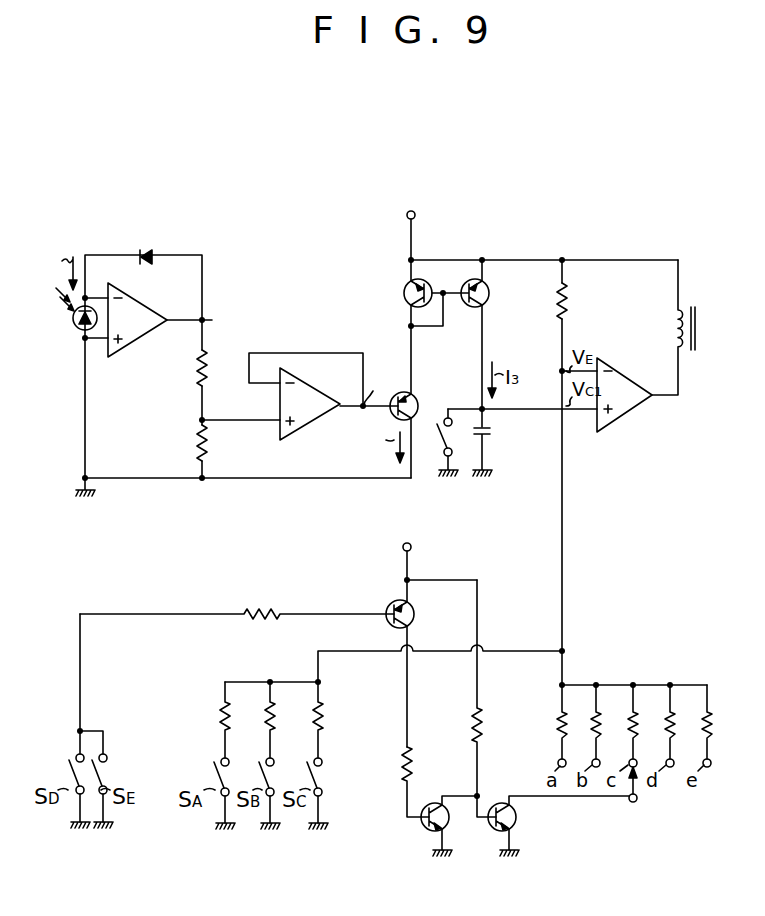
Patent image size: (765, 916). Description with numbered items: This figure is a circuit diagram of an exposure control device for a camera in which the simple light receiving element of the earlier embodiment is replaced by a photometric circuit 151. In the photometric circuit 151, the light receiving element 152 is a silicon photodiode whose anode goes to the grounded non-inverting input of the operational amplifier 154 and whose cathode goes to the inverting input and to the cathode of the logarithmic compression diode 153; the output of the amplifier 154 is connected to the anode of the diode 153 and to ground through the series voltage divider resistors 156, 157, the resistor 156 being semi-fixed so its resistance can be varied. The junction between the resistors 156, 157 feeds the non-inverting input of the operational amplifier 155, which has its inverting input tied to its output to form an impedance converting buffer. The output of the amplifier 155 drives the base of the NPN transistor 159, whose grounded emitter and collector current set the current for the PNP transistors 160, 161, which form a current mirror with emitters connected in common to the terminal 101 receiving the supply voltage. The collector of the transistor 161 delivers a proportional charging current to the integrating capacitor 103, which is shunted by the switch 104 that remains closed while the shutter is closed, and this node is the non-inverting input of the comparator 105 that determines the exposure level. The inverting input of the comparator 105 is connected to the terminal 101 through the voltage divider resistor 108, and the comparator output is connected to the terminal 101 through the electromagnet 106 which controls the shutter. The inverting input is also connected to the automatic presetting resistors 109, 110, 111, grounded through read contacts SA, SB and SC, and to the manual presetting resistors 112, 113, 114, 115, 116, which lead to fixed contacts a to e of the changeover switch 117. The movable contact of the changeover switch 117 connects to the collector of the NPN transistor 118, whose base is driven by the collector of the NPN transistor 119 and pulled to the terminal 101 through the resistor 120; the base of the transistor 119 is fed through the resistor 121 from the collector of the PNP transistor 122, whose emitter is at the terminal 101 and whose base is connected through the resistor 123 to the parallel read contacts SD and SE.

The terminal 101 is at (406, 215).
The integrating capacitor 103 is at (490, 432).
The switch 104 is at (430, 438).
The comparator 105 is at (627, 407).
The electromagnet 106 is at (673, 330).
The voltage divider resistor 108 is at (568, 301).
The automatic presetting resistor 109 is at (219, 712).
The automatic presetting resistor 110 is at (265, 714).
The automatic presetting resistor 111 is at (313, 712).
The manual presetting resistor 112 is at (555, 718).
The manual presetting resistor 113 is at (590, 718).
The manual presetting resistor 114 is at (627, 718).
The manual presetting resistor 115 is at (664, 718).
The manual presetting resistor 116 is at (701, 718).
The changeover switch 117 is at (638, 803).
The NPN transistor 118 is at (492, 832).
The NPN transistor 119 is at (421, 830).
The resistor 120 is at (470, 730).
The resistor 121 is at (401, 767).
The PNP transistor 122 is at (418, 614).
The resistor 123 is at (261, 607).
The photometric circuit 151 is at (282, 308).
The light receiving element 152 is at (72, 318).
The logarithmic compression diode 153 is at (147, 253).
The operational amplifier 154 is at (146, 312).
The operational amplifier 155 is at (310, 391).
The resistor 156 is at (197, 360).
The resistor 157 is at (239, 443).
The NPN transistor 159 is at (415, 398).
The PNP transistor 160 is at (404, 293).
The PNP transistor 161 is at (489, 293).